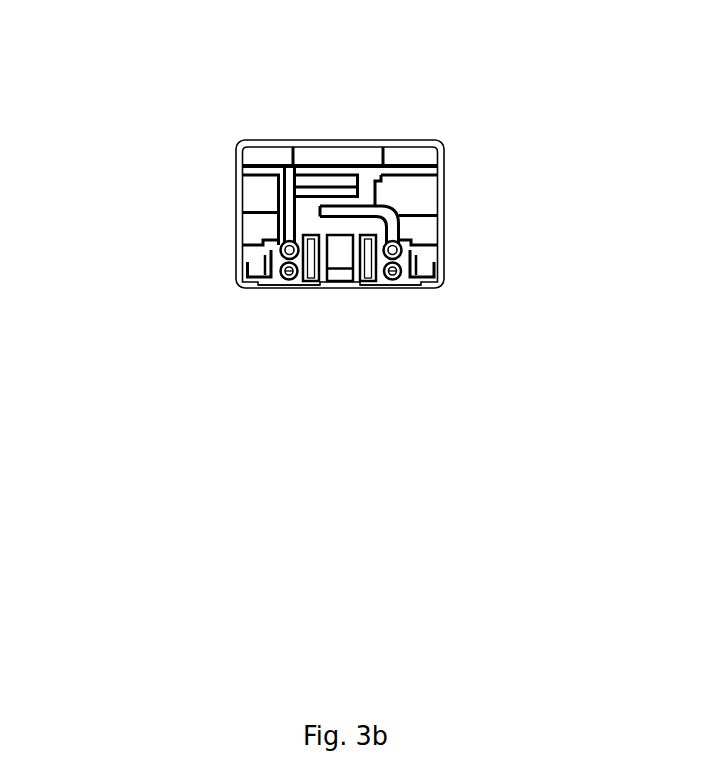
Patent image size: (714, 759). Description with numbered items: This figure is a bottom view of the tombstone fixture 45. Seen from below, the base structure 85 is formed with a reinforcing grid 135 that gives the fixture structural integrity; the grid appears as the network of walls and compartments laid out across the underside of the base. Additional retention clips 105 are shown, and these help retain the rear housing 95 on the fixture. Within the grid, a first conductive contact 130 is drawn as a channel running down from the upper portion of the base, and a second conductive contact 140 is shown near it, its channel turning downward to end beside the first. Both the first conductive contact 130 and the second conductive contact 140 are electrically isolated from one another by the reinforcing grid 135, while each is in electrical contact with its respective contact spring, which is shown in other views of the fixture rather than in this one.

The tombstone fixture 45 is at (155, 340).
The base structure 85 is at (446, 159).
The rear housing 95 is at (271, 285).
The retention clips 105 is at (337, 283).
The first conductive contact 130 is at (291, 175).
The reinforcing grid 135 is at (245, 213).
The second conductive contact 140 is at (367, 206).